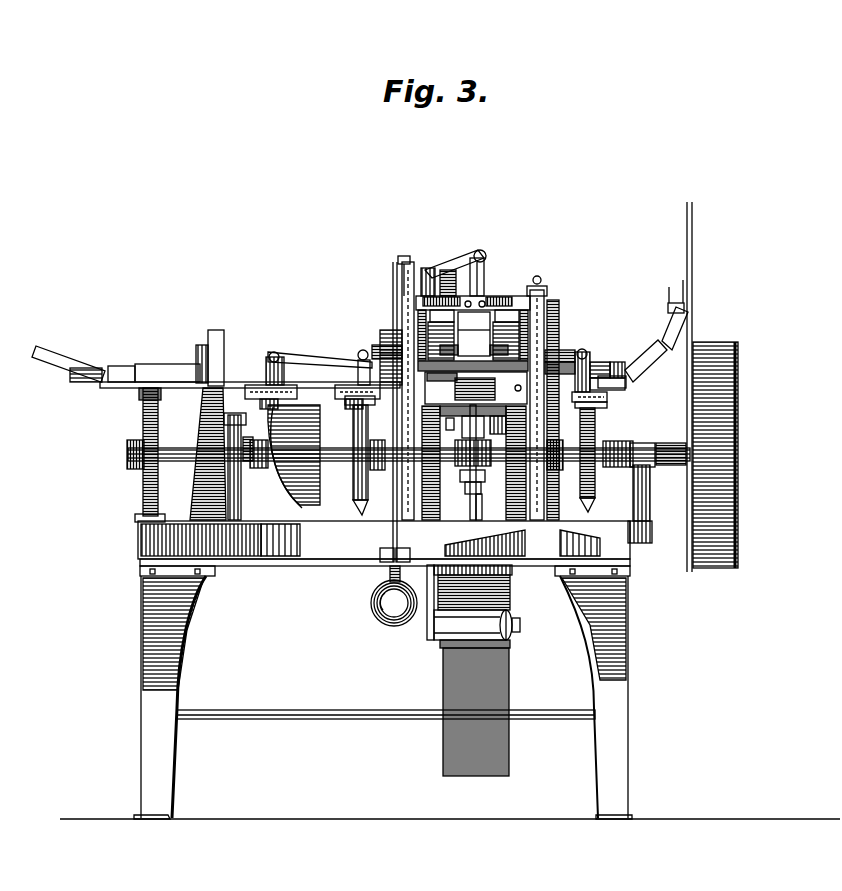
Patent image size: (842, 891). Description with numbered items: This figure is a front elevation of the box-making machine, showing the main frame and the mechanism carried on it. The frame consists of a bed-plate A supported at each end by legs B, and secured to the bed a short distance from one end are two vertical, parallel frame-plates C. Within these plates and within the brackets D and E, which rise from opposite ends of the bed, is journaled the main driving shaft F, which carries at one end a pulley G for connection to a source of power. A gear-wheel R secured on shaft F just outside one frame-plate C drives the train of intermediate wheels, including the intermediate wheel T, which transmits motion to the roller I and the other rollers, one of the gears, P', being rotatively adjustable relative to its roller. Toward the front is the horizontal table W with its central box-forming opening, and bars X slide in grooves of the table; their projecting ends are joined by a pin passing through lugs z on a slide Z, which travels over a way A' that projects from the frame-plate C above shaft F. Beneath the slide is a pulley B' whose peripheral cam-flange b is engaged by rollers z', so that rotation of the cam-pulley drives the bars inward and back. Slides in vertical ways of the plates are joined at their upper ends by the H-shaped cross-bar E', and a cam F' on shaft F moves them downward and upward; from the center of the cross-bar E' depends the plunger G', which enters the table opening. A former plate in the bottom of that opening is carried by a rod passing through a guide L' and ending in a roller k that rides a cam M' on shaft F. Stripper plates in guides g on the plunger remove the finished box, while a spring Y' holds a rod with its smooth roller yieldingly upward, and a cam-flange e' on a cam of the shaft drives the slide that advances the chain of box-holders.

The bed-plate A is at (380, 548).
The legs B is at (383, 697).
The frame-plates C is at (405, 320).
The bracket D is at (649, 493).
The bracket E is at (137, 455).
The shaft F is at (408, 442).
The pulley G is at (724, 387).
The way A' is at (408, 354).
The pulley B' is at (480, 448).
The cross-bar E' is at (476, 296).
The cam F' is at (474, 476).
The plunger G' is at (473, 336).
The guide L' is at (484, 462).
The cam M' is at (469, 467).
The gear P' is at (566, 404).
The bracket Q' is at (372, 348).
The table W is at (476, 388).
The plate W' is at (488, 385).
The spring Y' is at (464, 496).
The rollers z' is at (597, 404).
The cam-flange e' is at (263, 479).
The roller I is at (512, 427).
The post Q is at (490, 275).
The gear-wheel R is at (553, 443).
The intermediate wheel T is at (560, 480).
The bars X is at (378, 362).
The slide Z is at (618, 392).
The cam-flange b is at (360, 503).
The guide g is at (483, 300).
The roller k is at (470, 427).
The lugs z is at (469, 357).